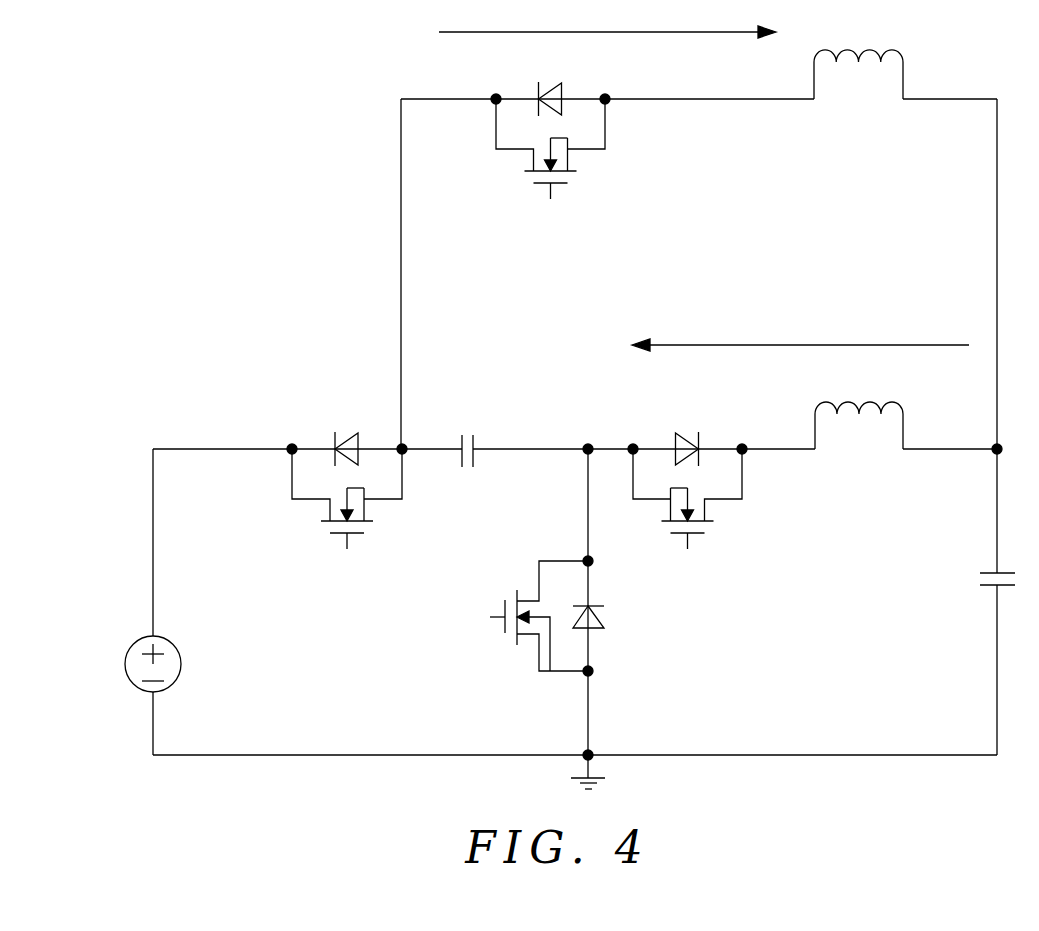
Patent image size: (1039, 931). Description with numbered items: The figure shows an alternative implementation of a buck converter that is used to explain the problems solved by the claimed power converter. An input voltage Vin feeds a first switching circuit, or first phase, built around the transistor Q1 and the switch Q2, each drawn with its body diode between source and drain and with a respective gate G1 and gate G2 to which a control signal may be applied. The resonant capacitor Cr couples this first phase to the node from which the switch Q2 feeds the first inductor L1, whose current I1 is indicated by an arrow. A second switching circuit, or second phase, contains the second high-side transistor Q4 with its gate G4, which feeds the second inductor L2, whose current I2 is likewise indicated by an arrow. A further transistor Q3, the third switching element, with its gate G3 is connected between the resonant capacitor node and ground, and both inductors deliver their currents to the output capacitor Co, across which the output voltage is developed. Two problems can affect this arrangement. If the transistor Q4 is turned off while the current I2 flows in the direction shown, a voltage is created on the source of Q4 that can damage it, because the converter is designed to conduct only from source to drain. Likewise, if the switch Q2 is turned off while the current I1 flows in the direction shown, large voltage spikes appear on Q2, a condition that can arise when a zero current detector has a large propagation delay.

The first high-side transistor Q1 is at (347, 467).
The switch Q2 is at (687, 467).
The transistor Q3 is at (579, 616).
The second high-side transistor Q4 is at (550, 116).
The gate G1 is at (347, 556).
The gate G2 is at (688, 556).
The gate G3 is at (481, 616).
The gate G4 is at (551, 207).
The resonant capacitor Cr is at (495, 436).
The output capacitor Co is at (987, 602).
The first inductor L1 is at (859, 409).
The second inductor L2 is at (858, 58).
The input voltage Vin is at (179, 664).
The current I1 is at (800, 334).
The current I2 is at (607, 20).